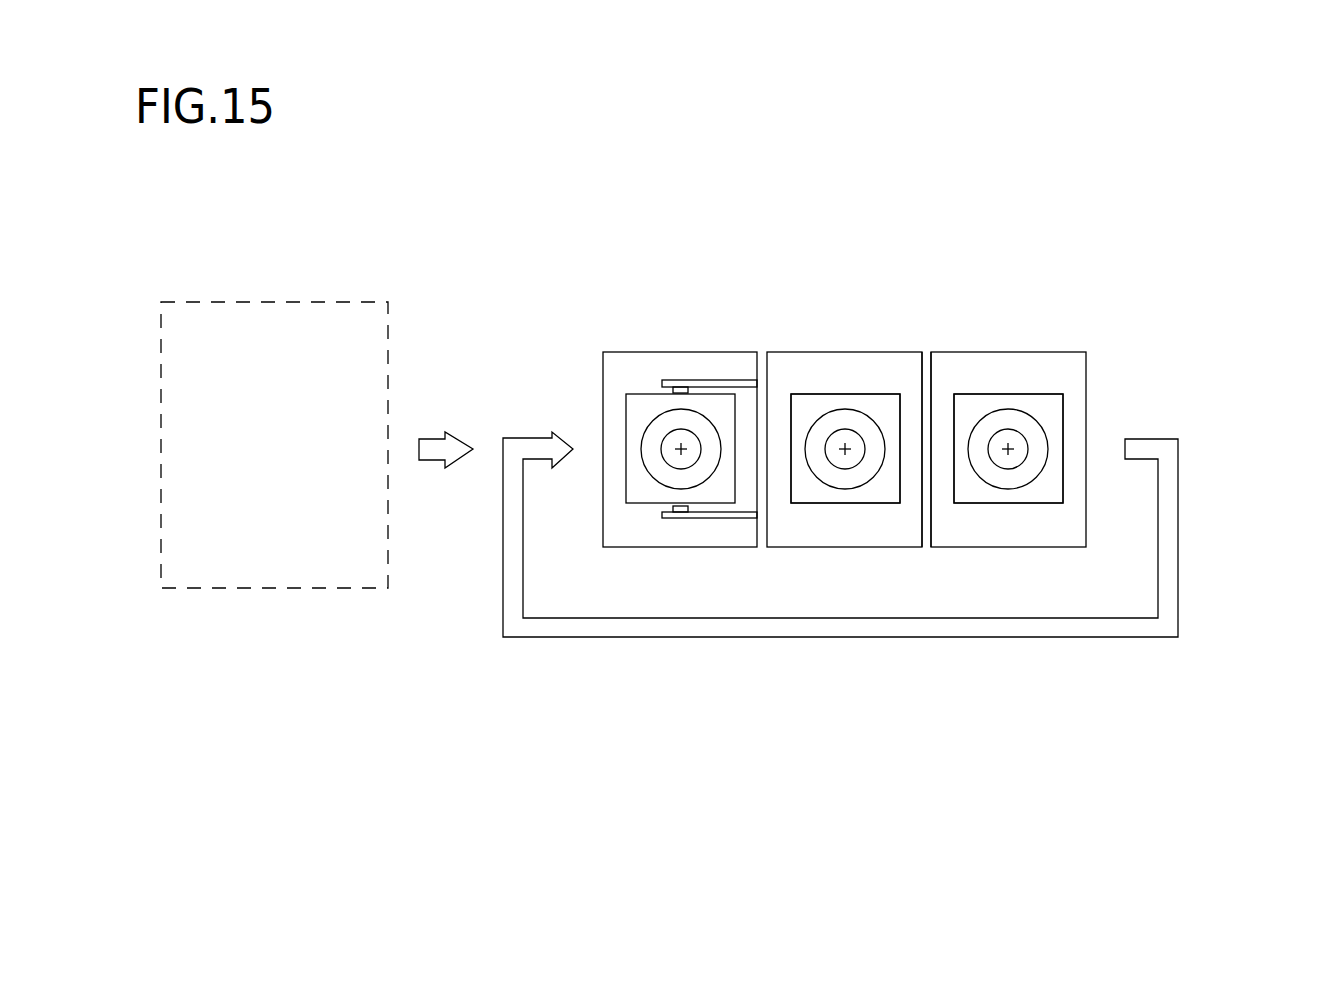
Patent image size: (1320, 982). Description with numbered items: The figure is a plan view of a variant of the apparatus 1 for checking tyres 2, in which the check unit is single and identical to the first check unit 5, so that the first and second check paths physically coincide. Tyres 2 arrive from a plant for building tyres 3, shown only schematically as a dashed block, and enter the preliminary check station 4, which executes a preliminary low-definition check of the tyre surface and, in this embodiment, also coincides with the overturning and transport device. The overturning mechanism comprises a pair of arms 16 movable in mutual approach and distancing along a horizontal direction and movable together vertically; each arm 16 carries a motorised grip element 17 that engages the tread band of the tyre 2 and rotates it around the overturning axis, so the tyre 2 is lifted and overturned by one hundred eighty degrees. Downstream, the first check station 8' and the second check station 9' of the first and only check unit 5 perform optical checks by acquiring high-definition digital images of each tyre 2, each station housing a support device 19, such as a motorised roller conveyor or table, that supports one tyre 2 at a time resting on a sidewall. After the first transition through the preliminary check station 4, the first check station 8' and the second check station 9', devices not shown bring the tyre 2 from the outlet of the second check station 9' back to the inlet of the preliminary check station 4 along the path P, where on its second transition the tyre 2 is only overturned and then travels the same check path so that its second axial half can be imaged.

The apparatus for checking tyres 1 is at (1049, 211).
The tyre 2 is at (653, 420).
The plant for building tyres 3 is at (368, 600).
The preliminary check station 4 is at (618, 341).
The first check unit 5 is at (926, 333).
The first check station 8' is at (846, 346).
The second check station 9' is at (1054, 395).
The arms 16 is at (703, 381).
The motorised grip element 17 is at (662, 390).
The support device 19 is at (884, 489).
The path P is at (1178, 575).